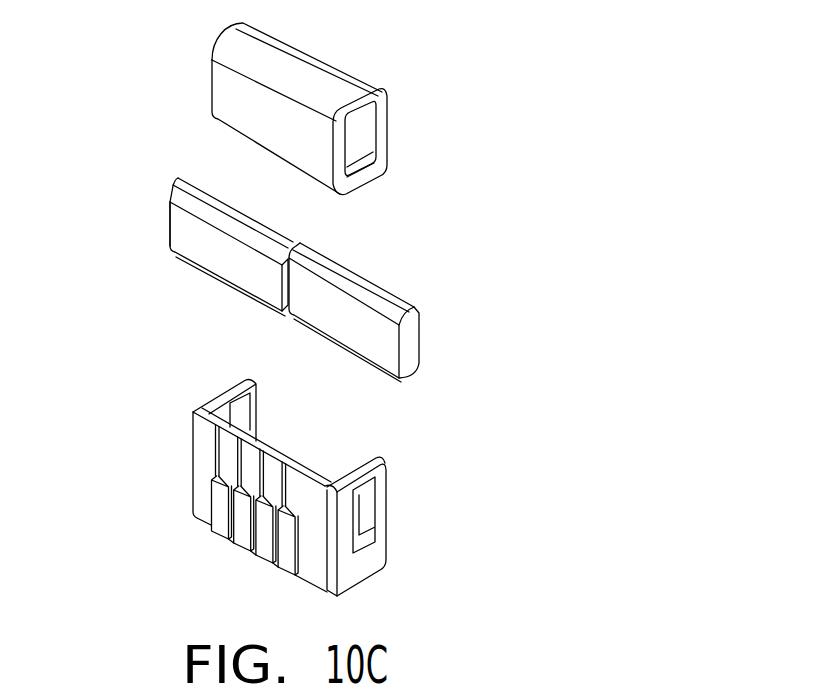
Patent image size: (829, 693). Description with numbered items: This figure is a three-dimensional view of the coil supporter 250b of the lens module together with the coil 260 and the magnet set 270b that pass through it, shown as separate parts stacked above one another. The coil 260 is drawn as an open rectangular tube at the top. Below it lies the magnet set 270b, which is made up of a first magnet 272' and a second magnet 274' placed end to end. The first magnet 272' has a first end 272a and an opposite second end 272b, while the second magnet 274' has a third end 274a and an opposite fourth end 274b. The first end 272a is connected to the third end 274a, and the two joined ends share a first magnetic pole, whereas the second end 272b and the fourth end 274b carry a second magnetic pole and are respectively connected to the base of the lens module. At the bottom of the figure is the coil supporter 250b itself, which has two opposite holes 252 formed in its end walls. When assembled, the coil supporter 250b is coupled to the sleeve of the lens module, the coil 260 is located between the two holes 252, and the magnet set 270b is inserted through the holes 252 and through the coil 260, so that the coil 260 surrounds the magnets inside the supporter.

The coil 260 is at (288, 82).
The magnet set 270b is at (177, 389).
The first magnet 272' is at (169, 243).
The first end 272a is at (266, 239).
The second end 272b is at (160, 213).
The second magnet 274' is at (365, 313).
The third end 274a is at (296, 281).
The fourth end 274b is at (423, 346).
The coil supporter 250b is at (282, 473).
The holes 252 is at (248, 421).